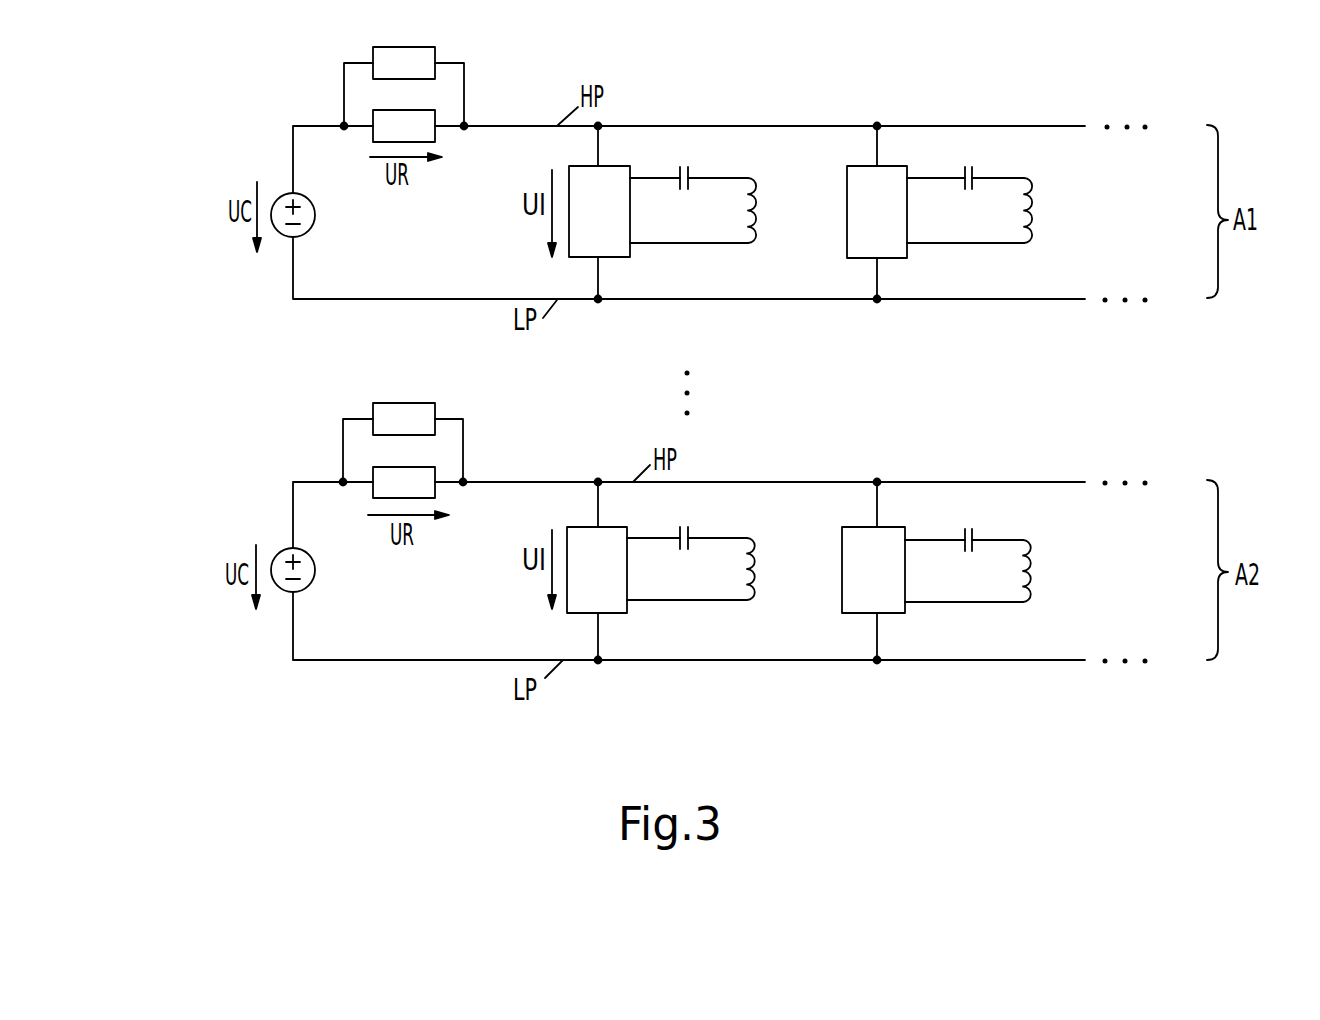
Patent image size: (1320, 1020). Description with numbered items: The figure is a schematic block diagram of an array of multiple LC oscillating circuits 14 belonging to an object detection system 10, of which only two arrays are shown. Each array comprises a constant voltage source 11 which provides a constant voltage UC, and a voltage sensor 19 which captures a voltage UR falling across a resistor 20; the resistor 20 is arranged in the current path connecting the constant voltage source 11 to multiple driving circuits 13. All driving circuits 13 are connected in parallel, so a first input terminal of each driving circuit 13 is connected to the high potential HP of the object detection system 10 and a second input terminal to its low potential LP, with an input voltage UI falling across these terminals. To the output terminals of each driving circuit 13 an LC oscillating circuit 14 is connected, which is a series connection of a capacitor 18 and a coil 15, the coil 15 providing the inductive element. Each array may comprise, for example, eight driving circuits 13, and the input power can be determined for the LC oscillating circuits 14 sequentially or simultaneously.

The object detection system 10 is at (220, 686).
The constant voltage source 11 is at (305, 193).
The driving circuit 13 is at (613, 163).
The LC oscillating circuit 14 is at (854, 366).
The coil 15 is at (760, 207).
The capacitor 18 is at (690, 170).
The voltage sensor 19 is at (407, 45).
The resistor 20 is at (435, 112).